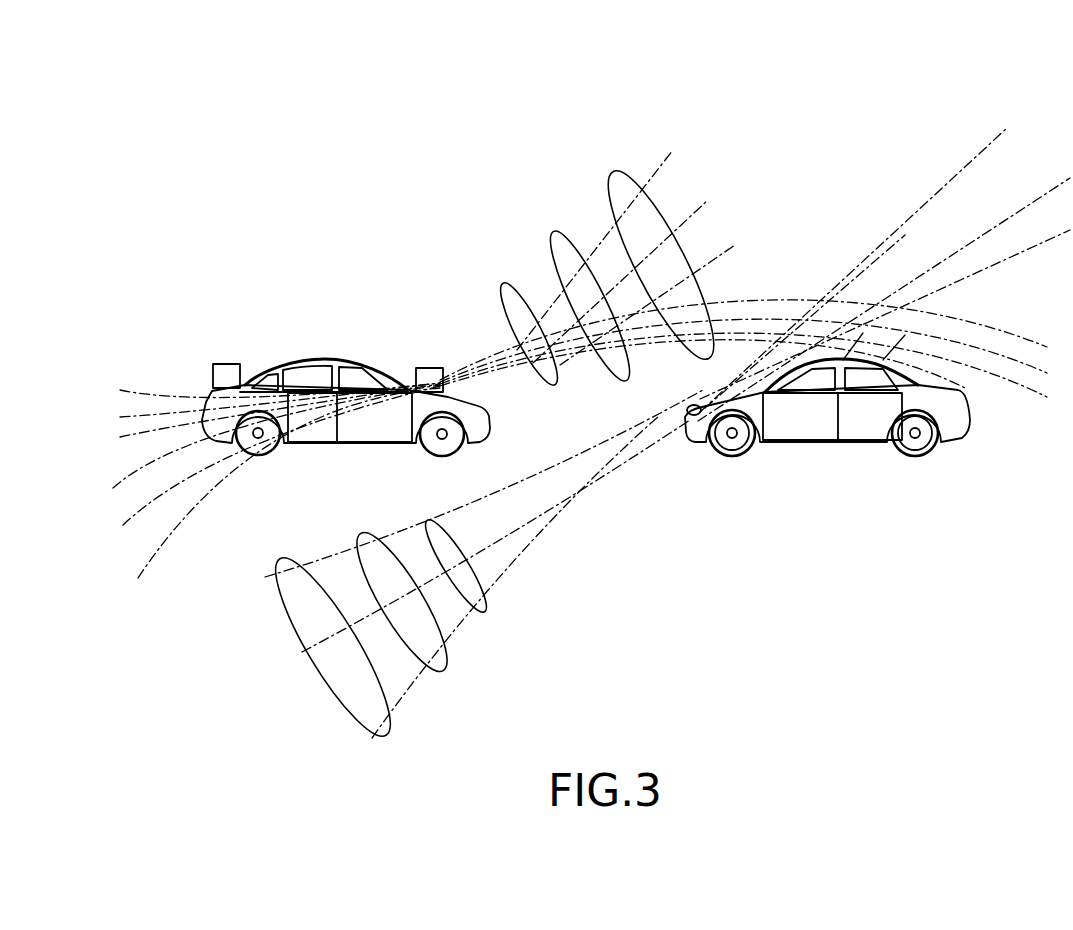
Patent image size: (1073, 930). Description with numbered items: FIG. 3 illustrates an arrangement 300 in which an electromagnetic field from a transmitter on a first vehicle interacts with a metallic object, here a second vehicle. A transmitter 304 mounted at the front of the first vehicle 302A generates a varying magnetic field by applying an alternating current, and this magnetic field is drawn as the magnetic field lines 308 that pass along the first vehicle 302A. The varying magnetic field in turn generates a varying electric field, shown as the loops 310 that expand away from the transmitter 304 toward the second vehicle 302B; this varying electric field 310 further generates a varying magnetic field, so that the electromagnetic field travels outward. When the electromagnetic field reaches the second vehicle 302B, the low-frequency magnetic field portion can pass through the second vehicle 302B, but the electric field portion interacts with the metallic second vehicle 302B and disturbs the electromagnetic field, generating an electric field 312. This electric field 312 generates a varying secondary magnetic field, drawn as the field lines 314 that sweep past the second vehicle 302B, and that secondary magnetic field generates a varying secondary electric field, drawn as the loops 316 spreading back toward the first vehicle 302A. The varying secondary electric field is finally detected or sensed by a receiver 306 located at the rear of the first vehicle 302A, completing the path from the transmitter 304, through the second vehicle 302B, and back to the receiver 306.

The vehicle sensing environment 300 is at (887, 121).
The first vehicle 302A is at (332, 365).
The second vehicle 302B is at (972, 425).
The transmitter 304 is at (435, 368).
The receiver 306 is at (225, 363).
The magnetic field lines 308 is at (205, 390).
The loops (varying electric field) 310 is at (637, 183).
The electric field 312 is at (814, 358).
The field lines (varying secondary magnetic field) 314 is at (943, 213).
The loops (varying secondary electric field) 316 is at (333, 690).